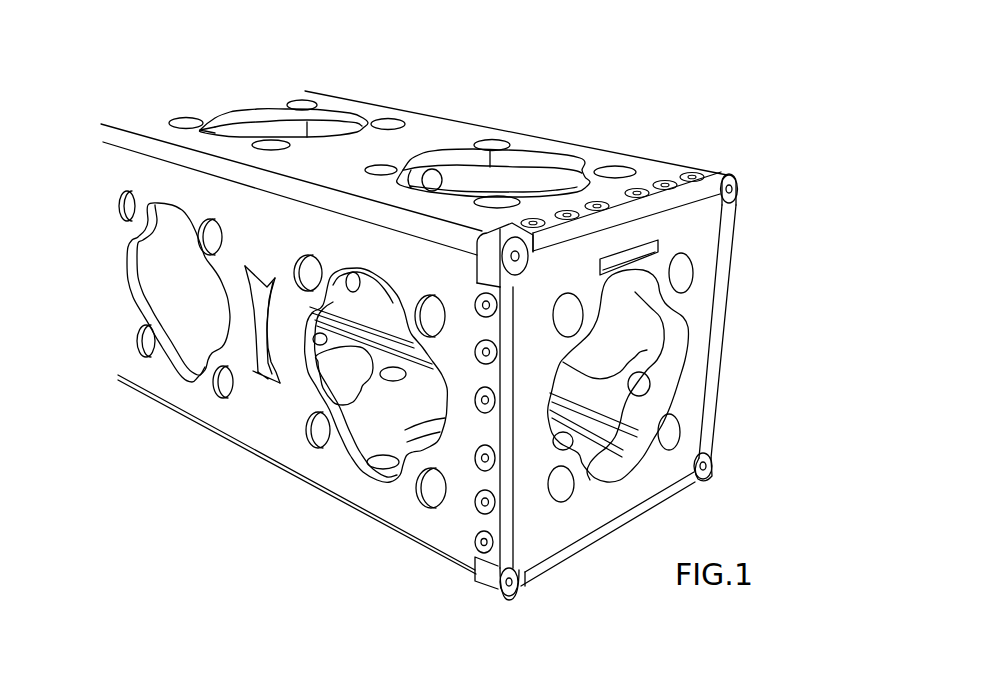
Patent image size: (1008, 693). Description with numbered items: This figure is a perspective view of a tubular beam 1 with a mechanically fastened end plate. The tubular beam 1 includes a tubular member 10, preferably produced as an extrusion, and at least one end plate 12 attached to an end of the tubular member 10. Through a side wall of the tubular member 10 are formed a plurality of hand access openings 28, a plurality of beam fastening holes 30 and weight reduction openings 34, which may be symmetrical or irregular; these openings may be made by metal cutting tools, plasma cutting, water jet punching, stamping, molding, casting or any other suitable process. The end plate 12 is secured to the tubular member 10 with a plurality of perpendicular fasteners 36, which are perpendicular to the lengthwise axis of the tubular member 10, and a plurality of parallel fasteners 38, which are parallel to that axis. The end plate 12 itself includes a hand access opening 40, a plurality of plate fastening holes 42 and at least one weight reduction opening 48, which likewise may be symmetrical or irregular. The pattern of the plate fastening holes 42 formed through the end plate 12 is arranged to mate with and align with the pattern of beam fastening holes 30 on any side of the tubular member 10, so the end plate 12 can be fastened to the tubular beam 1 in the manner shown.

The tubular beam 1 is at (558, 105).
The tubular member 10 is at (452, 118).
The end plate 12 is at (720, 228).
The hand access openings 28 is at (178, 372).
The beam fastening holes 30 is at (226, 398).
The weight reduction openings 34 is at (268, 386).
The perpendicular fasteners 36 is at (473, 537).
The parallel fasteners 38 is at (735, 197).
The hand access opening 40 is at (693, 330).
The plate fastening holes 42 is at (680, 427).
The weight reduction opening 48 is at (627, 260).